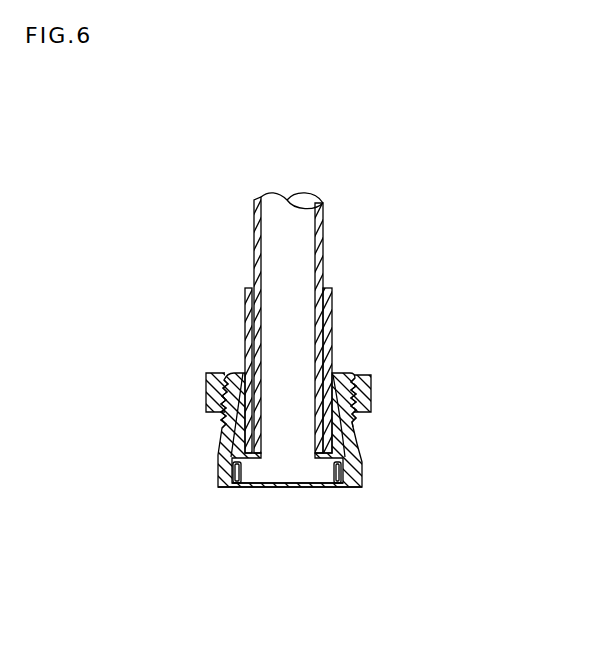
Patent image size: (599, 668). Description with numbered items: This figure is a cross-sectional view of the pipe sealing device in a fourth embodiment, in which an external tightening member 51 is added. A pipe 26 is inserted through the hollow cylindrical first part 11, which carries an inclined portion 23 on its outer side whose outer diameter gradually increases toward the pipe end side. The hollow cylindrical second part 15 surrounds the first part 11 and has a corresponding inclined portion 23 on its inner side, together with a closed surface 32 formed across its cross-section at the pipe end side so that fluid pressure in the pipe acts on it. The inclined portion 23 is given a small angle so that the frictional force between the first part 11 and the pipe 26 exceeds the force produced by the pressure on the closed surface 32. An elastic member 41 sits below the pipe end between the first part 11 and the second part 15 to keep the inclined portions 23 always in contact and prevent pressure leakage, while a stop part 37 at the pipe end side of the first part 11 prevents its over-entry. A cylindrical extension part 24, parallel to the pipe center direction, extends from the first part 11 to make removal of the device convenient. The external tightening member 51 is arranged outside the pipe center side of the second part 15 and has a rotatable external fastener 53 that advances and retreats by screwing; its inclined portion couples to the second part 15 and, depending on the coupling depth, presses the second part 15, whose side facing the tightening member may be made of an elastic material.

The pipe 26 is at (222, 196).
The cylindrical extension part 24 is at (215, 318).
The external fastener 53 is at (200, 392).
The external tightening member 51 is at (208, 426).
The second part 15 is at (200, 464).
The stop part 37 is at (258, 466).
The closed surface 32 is at (298, 508).
The elastic member 41 is at (337, 472).
The first part 11 is at (333, 429).
The inclined portion 23 is at (337, 432).